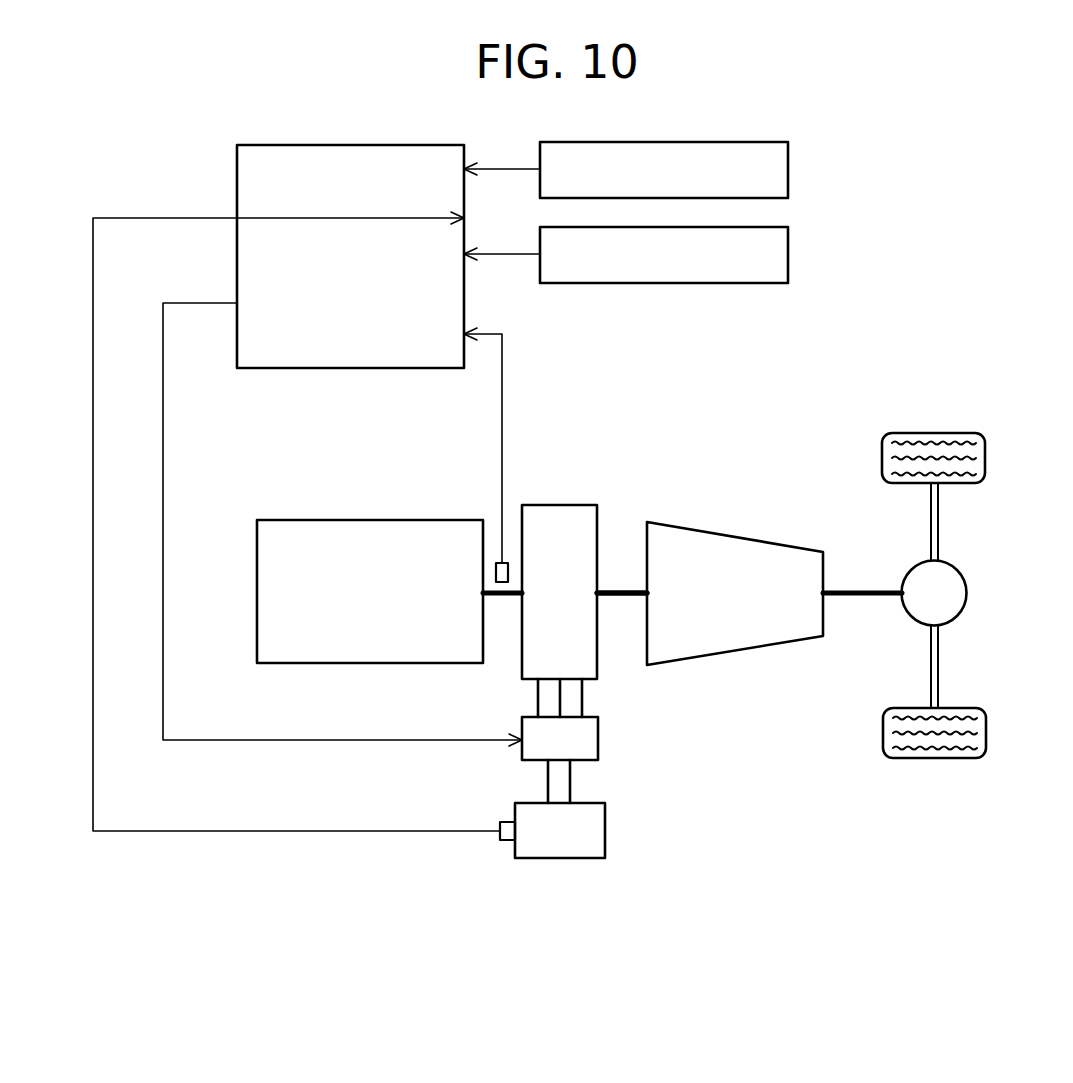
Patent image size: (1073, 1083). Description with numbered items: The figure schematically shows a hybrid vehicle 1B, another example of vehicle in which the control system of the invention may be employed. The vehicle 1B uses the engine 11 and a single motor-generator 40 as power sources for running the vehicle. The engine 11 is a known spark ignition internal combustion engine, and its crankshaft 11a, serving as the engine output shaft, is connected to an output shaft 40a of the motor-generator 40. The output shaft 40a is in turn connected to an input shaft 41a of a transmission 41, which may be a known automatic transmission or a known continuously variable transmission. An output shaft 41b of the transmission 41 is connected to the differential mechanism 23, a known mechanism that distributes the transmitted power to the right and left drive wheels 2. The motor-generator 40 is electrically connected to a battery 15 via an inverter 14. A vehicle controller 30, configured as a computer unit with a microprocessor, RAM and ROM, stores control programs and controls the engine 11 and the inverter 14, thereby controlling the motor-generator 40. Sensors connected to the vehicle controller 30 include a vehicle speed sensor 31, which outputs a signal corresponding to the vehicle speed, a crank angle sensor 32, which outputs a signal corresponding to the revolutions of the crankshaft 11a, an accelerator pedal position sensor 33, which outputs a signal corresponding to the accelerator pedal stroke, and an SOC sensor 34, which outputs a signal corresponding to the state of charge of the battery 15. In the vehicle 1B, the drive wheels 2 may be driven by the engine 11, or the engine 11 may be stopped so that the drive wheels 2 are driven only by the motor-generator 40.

The hybrid vehicle 1B is at (973, 217).
The drive wheels 2 is at (985, 448).
The engine 11 is at (400, 519).
The crankshaft 11a is at (505, 600).
The inverter 14 is at (588, 743).
The battery 15 is at (600, 835).
The differential mechanism 23 is at (960, 597).
The vehicle controller 30 is at (314, 368).
The vehicle speed sensor 31 is at (789, 162).
The crank angle sensor 32 is at (498, 560).
The accelerator pedal position sensor 33 is at (789, 247).
The SOC sensor 34 is at (503, 842).
The motor-generator 40 is at (568, 505).
The output shaft of the motor-generator 40a is at (617, 590).
The transmission 41 is at (740, 640).
The input shaft of the transmission 41a is at (627, 598).
The output shaft of the transmission 41b is at (867, 600).